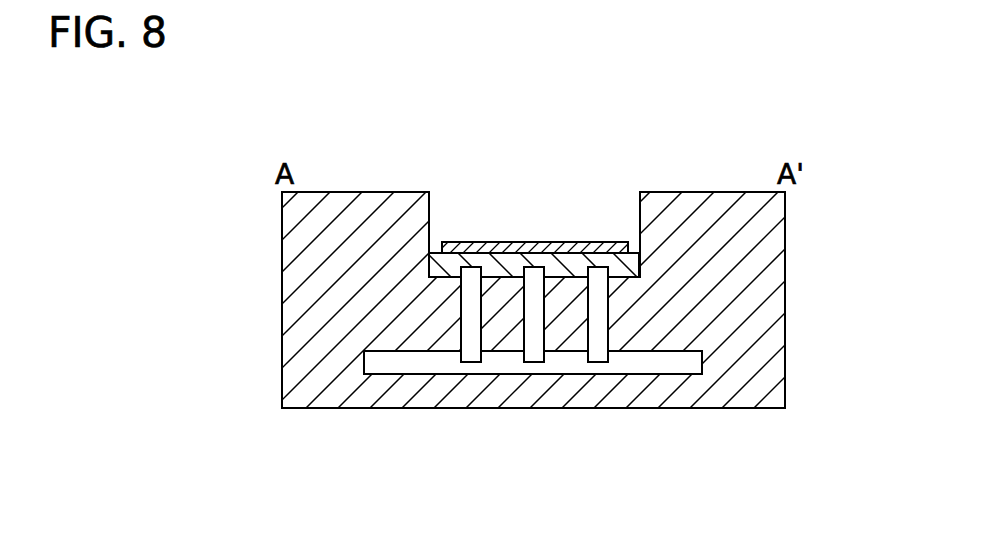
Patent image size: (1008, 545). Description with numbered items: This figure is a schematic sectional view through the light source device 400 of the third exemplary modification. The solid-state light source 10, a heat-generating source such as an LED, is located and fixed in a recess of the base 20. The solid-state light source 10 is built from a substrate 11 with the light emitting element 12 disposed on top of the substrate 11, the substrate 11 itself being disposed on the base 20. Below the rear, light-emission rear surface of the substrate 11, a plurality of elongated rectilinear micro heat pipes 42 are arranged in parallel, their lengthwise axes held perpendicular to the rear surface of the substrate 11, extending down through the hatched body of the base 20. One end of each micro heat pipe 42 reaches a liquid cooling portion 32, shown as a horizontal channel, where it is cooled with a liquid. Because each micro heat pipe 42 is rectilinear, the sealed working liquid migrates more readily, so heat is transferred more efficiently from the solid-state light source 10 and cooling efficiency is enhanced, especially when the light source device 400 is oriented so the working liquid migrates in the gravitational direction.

The light source device 400 is at (865, 116).
The solid-state light source 10 is at (485, 240).
The substrate 11 is at (538, 242).
The light emitting element 12 is at (602, 252).
The base 20 is at (772, 332).
The liquid cooling portion 32 is at (652, 368).
The micro heat pipes 42 is at (470, 356).